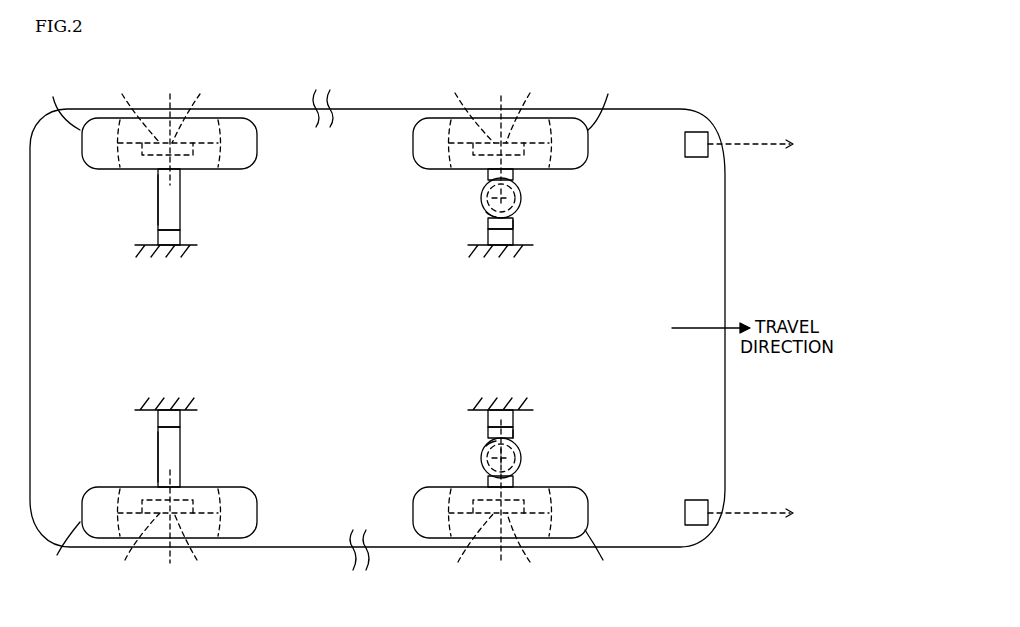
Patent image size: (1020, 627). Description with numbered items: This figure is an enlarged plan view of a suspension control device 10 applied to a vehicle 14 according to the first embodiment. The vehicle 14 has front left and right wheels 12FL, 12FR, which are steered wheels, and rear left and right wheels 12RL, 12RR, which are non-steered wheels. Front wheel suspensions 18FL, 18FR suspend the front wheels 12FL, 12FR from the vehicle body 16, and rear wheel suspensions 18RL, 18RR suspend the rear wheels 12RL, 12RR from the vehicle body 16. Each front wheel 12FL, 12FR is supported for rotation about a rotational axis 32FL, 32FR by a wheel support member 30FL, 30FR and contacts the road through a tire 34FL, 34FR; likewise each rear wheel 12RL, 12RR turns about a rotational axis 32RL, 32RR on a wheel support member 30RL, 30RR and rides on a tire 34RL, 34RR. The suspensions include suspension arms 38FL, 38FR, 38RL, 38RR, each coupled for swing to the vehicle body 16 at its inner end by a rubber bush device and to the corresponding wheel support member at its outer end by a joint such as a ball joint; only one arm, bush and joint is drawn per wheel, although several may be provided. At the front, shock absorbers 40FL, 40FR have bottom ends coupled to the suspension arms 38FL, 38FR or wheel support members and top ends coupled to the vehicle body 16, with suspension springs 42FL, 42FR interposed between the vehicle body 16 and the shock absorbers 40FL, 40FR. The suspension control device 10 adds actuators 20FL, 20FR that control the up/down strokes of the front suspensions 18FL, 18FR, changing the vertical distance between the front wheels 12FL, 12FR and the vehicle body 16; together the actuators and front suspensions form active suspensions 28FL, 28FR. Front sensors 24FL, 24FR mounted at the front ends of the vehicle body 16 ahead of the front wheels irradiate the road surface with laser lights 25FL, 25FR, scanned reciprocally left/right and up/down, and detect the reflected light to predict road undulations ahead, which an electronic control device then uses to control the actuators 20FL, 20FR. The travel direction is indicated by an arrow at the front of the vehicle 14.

The suspension control device 10 is at (706, 102).
The vehicle 14 is at (372, 101).
The front left wheel 12FL is at (413, 148).
The front right wheel 12FR is at (413, 515).
The rear left wheel 12RL is at (228, 170).
The rear right wheel 12RR is at (230, 487).
The vehicle body 16 is at (166, 258).
The front left wheel suspension 18FL is at (421, 218).
The front right wheel suspension 18FR is at (420, 437).
The rear left wheel suspension 18RL is at (198, 205).
The rear right wheel suspension 18RR is at (199, 447).
The actuator 20FL is at (482, 210).
The actuator 20FR is at (482, 448).
The front sensor 24FL is at (697, 158).
The front sensor 24FR is at (692, 500).
The laser light 25FL is at (725, 144).
The laser light 25FR is at (755, 513).
The active suspension 28FL is at (527, 208).
The active suspension 28FR is at (524, 448).
The wheel support member 30FL is at (460, 108).
The wheel support member 30FR is at (464, 549).
The wheel support member 30RL is at (130, 108).
The wheel support member 30RR is at (131, 546).
The rotational axis 32FL is at (530, 108).
The rotational axis 32FR is at (529, 549).
The rotational axis 32RL is at (197, 108).
The rotational axis 32RR is at (200, 546).
The tire 34FL is at (608, 102).
The tire 34FR is at (603, 557).
The tire 34RL is at (55, 102).
The tire 34RR is at (56, 551).
The suspension arm 38FL is at (513, 224).
The suspension arm 38FR is at (513, 433).
The suspension arm 38RL is at (166, 205).
The suspension arm 38RR is at (166, 448).
The shock absorber 40FL is at (521, 198).
The shock absorber 40FR is at (521, 460).
The suspension spring 42FL is at (481, 198).
The suspension spring 42FR is at (481, 460).